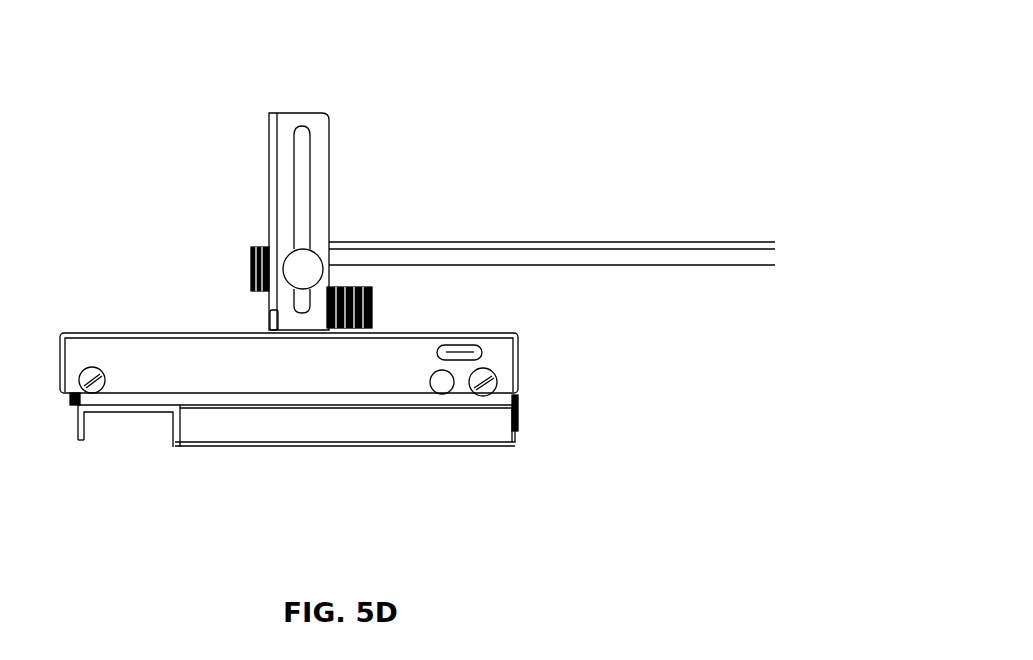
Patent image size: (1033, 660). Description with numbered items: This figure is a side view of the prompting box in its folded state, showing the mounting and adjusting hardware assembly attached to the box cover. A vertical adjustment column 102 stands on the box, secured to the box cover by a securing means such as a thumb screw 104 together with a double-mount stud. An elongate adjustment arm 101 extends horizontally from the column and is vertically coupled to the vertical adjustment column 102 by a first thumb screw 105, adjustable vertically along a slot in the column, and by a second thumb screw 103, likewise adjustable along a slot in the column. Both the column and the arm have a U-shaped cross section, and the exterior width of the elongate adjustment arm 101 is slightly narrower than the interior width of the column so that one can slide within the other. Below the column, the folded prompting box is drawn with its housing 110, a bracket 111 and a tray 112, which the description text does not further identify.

The elongate adjustment arm 101 is at (490, 256).
The vertical adjustment column 102 is at (293, 122).
The second thumb screw 103 is at (303, 152).
The thumb screw 104 is at (372, 305).
The first thumb screw 105 is at (251, 268).
The housing 110 is at (120, 355).
The bracket 111 is at (128, 412).
The tray 112 is at (472, 428).